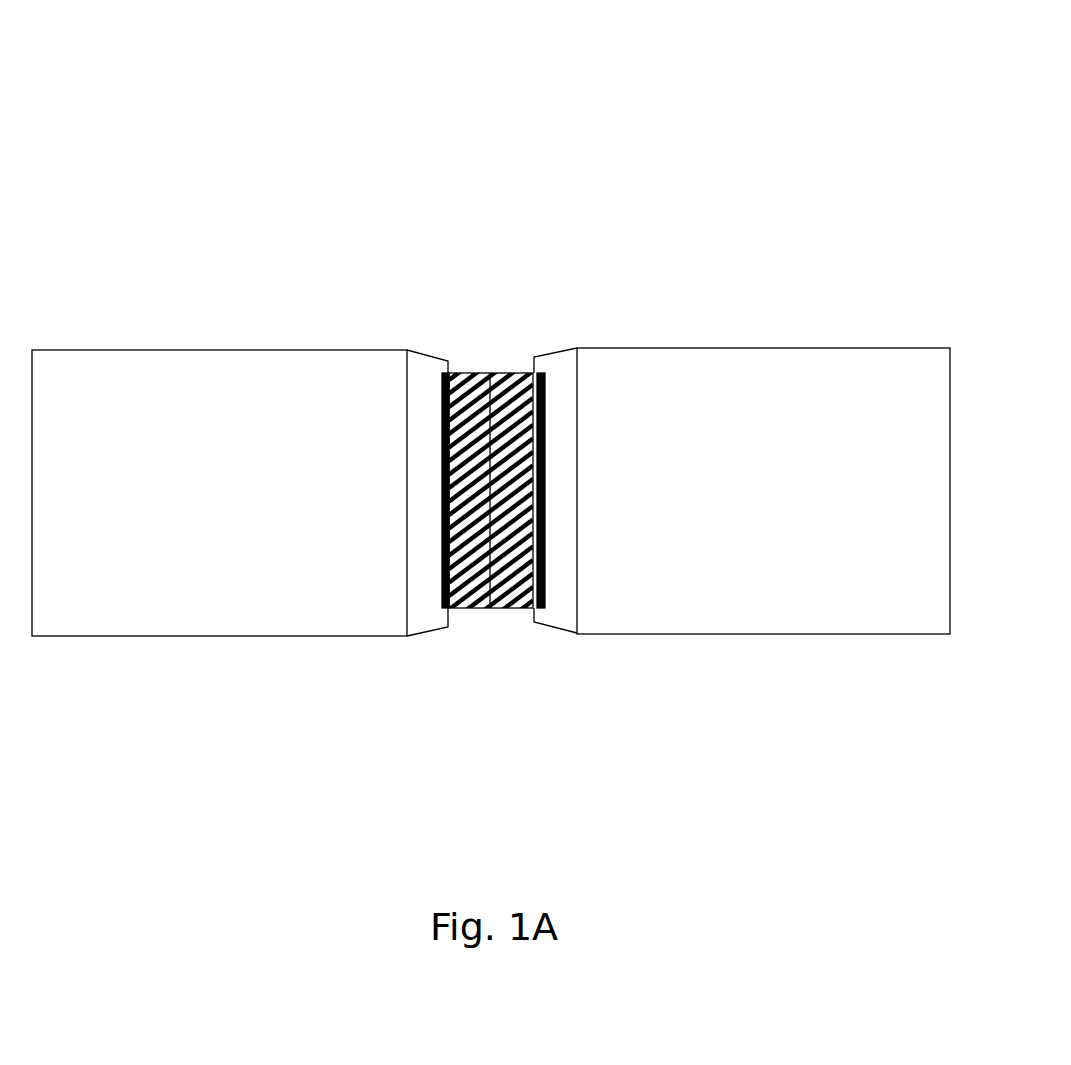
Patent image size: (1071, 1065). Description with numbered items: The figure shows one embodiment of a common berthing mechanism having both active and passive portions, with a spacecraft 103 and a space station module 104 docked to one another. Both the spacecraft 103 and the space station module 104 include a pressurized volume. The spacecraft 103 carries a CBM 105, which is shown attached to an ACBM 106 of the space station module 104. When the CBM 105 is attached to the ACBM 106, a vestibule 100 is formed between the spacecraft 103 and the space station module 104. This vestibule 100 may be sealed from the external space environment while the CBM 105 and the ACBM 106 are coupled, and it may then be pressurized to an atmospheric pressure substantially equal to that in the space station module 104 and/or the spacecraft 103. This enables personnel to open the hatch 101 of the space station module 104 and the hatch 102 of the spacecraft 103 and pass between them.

The vestibule 100 is at (435, 368).
The hatch 101 is at (443, 553).
The hatch 102 is at (549, 573).
The spacecraft 103 is at (742, 491).
The space station module 104 is at (240, 493).
The CBM 105 is at (510, 362).
The ACBM 106 is at (470, 362).